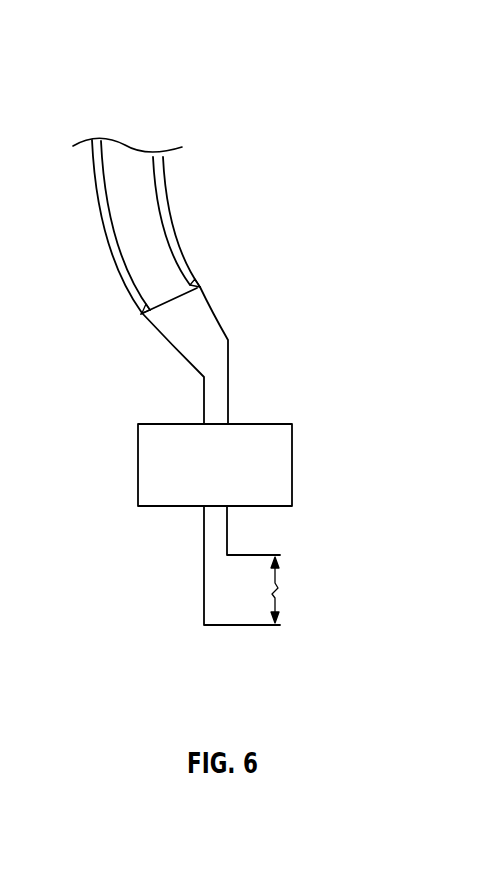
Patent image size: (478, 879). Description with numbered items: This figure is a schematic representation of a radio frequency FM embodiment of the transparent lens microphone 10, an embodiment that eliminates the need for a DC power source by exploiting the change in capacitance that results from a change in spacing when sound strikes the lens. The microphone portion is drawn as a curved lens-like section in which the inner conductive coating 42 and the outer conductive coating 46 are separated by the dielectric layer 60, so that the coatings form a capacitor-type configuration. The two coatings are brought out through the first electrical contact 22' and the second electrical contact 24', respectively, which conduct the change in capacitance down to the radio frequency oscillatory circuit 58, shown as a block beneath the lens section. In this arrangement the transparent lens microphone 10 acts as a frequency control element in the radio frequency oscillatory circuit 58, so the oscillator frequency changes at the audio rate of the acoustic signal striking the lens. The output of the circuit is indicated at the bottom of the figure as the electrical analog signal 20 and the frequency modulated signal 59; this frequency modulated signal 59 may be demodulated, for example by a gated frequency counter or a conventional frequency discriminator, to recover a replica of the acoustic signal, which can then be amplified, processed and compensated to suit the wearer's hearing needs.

The transparent lens microphone 10 is at (222, 327).
The dielectric layer 60 is at (132, 212).
The inner conductive coating 42 is at (182, 251).
The outer conductive coating 46 is at (120, 273).
The first electrical contact 22' is at (204, 305).
The second electrical contact 24' is at (149, 368).
The radio frequency oscillatory circuit 58 is at (292, 465).
The electrical analog signal 20 is at (292, 568).
The frequency modulated signal 59 is at (278, 596).